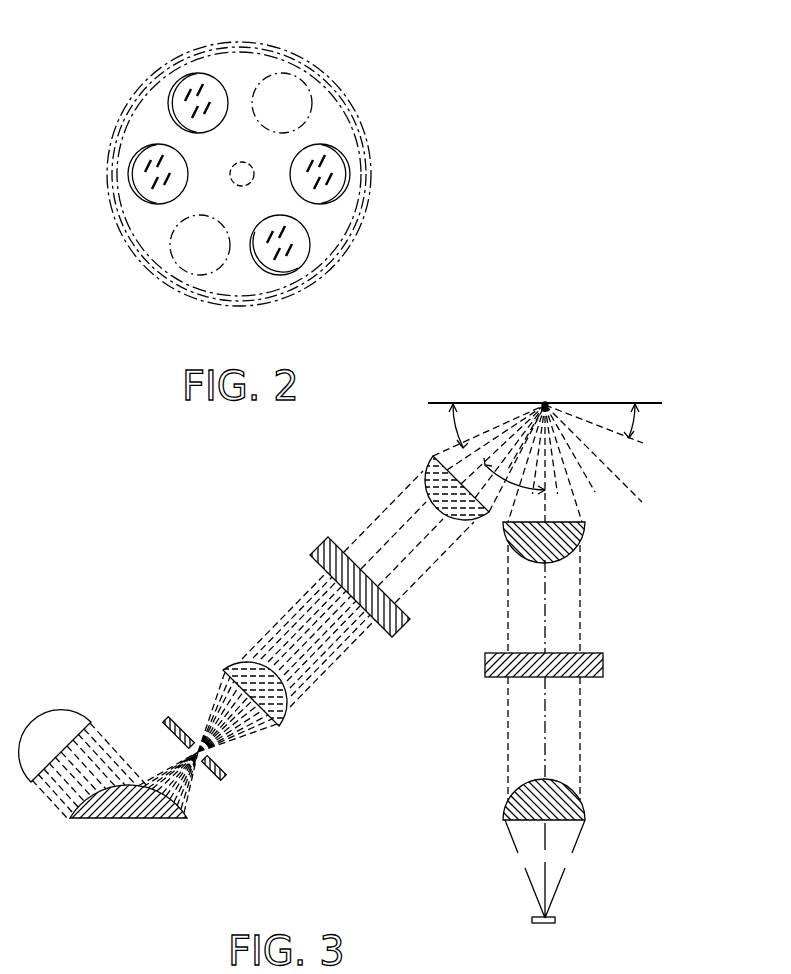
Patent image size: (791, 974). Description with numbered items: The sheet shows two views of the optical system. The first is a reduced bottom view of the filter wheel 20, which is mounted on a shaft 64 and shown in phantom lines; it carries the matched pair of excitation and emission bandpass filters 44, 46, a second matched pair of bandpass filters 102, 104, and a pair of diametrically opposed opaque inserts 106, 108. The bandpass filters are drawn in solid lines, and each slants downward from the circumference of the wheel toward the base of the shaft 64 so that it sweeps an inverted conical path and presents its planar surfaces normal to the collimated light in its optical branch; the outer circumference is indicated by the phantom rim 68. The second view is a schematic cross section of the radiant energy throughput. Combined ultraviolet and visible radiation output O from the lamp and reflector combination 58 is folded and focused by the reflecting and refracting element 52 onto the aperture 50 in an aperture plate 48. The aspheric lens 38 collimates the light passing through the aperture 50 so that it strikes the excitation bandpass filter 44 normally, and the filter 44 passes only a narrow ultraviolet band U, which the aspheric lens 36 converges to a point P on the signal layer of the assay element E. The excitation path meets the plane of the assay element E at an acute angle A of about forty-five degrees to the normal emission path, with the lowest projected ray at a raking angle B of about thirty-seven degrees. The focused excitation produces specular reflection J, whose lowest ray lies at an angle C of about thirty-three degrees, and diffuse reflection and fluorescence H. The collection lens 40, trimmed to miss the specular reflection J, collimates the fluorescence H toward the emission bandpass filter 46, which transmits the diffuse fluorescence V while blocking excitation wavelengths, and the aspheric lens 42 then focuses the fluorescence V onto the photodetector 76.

In FIG. 2, the filter wheel 20 is at (345, 92).
In FIG. 2, the wheel rim 68 is at (233, 42).
In FIG. 2, the bandpass filter 104 is at (184, 90).
In FIG. 2, the opaque insert 108 is at (290, 86).
In FIG. 2, the excitation bandpass filter 44 is at (137, 172).
In FIG. 3, the excitation bandpass filter 44 is at (318, 548).
In FIG. 2, the emission bandpass filter 46 is at (337, 180).
In FIG. 3, the emission bandpass filter 46 is at (603, 675).
In FIG. 2, the shaft 64 is at (250, 170).
In FIG. 2, the opaque insert 106 is at (197, 257).
In FIG. 2, the bandpass filter 102 is at (292, 255).
In FIG. 3, the aspheric lens 36 is at (422, 480).
In FIG. 3, the aspheric lens 38 is at (284, 726).
In FIG. 3, the aspheric collection lens 40 is at (584, 550).
In FIG. 3, the aspheric lens 42 is at (586, 817).
In FIG. 3, the aperture plate 48 is at (218, 774).
In FIG. 3, the aperture 50 is at (197, 745).
In FIG. 3, the reflecting and refracting element 52 is at (138, 820).
In FIG. 3, the lamp and reflector combination 58 is at (22, 740).
In FIG. 3, the photodetector 76 is at (556, 918).
In FIG. 3, the focus point P is at (545, 403).
In FIG. 3, the assay element E is at (598, 403).
In FIG. 3, the acute angle A is at (512, 488).
In FIG. 3, the raking angle B is at (456, 425).
In FIG. 3, the angle of lowest specularly reflected ray C is at (634, 422).
In FIG. 3, the specular reflection J is at (627, 482).
In FIG. 3, the filtered excitation radiation U is at (380, 512).
In FIG. 3, the diffuse reflection and fluorescence H is at (580, 612).
In FIG. 3, the diffuse fluorescence V is at (580, 740).
In FIG. 3, the radiation output O is at (118, 758).